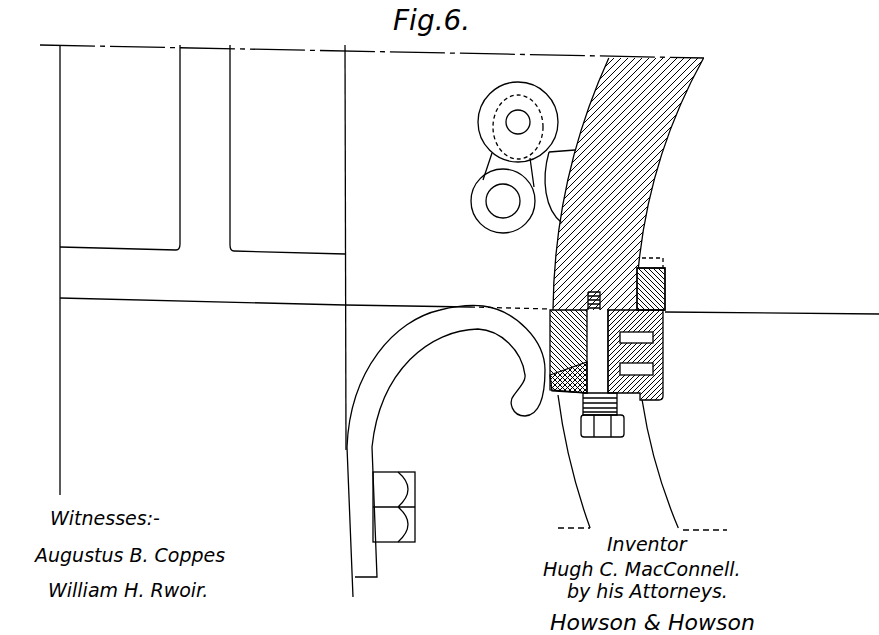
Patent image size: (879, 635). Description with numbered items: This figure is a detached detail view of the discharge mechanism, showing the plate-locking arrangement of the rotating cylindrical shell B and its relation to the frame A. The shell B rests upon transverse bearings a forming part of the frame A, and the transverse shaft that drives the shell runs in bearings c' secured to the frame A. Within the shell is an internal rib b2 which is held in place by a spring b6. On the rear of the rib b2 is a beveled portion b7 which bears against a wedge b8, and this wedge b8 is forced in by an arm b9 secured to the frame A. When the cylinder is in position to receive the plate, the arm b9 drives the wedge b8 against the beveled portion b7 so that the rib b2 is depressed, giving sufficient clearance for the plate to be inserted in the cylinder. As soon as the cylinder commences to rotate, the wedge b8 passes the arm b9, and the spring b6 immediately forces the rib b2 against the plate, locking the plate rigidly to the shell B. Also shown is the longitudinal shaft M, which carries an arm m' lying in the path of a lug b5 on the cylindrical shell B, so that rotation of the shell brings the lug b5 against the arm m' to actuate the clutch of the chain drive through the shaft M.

The frame A is at (372, 270).
The bearings c' is at (205, 148).
The transverse bearings a is at (596, 315).
The cylindrical shell B is at (640, 294).
The longitudinal shaft M is at (500, 192).
The arm m' is at (528, 121).
The lug b5 is at (560, 186).
The wedge b8 is at (561, 342).
The beveled portion b7 is at (643, 387).
The internal rib b2 is at (653, 316).
The spring b6 is at (585, 412).
The arm b9 is at (446, 451).